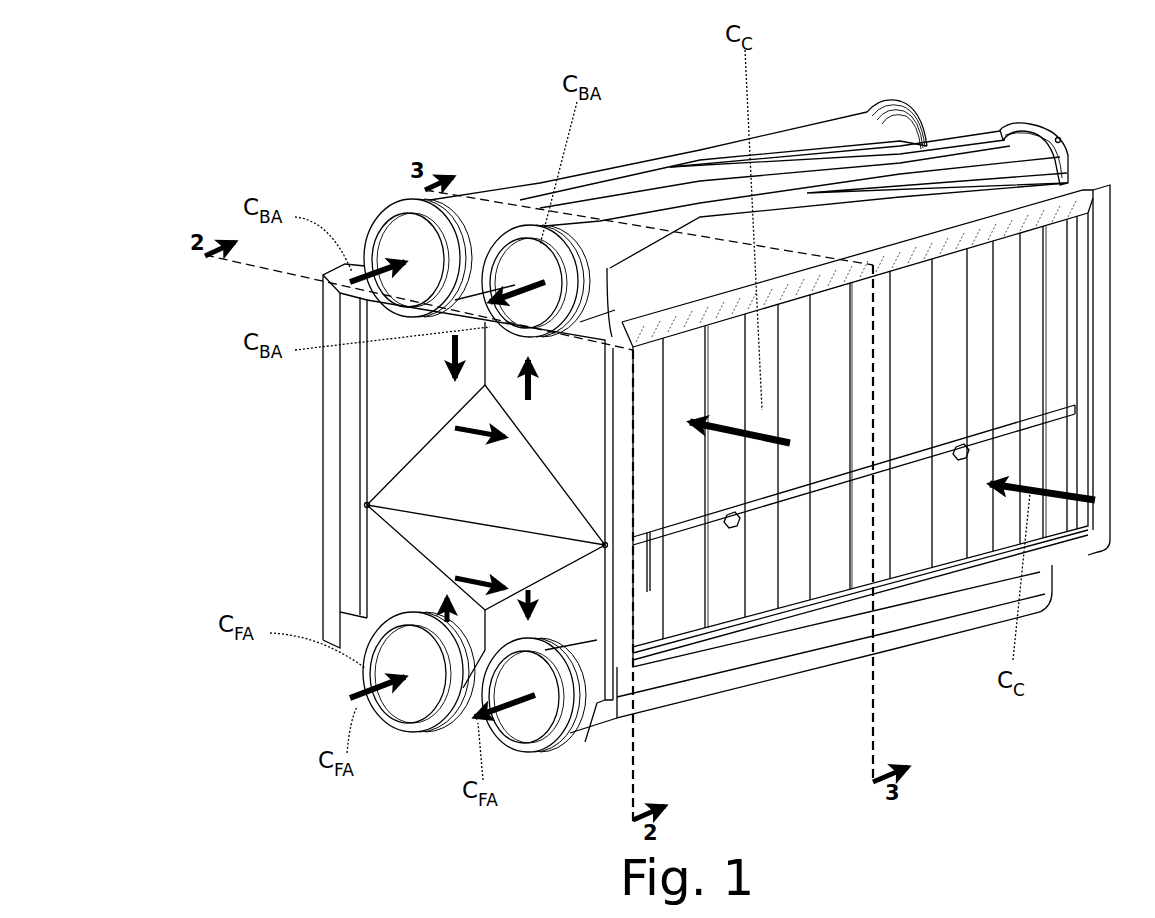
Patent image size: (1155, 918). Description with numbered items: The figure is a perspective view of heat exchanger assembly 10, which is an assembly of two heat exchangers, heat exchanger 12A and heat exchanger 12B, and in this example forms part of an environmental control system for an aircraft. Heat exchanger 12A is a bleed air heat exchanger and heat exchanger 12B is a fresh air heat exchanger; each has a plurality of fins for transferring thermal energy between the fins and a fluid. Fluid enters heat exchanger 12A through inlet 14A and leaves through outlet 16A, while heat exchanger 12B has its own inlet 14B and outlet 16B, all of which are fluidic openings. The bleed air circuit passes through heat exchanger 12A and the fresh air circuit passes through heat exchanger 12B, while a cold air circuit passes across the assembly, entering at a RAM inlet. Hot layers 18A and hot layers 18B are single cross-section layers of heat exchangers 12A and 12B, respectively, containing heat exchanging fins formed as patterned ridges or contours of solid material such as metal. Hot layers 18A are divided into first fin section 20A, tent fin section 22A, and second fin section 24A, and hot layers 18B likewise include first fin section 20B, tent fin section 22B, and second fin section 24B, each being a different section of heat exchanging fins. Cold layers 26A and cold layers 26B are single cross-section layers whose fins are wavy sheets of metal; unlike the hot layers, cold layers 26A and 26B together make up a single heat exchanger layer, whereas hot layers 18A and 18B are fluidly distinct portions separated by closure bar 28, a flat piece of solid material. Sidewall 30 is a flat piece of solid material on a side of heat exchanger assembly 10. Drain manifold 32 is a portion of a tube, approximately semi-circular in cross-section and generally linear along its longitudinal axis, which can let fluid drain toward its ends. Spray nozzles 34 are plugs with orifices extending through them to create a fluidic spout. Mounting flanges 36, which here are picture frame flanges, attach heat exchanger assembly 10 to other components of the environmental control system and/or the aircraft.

The heat exchanger assembly 10 is at (518, 136).
The heat exchanger 12A is at (362, 405).
The heat exchanger 12B is at (362, 562).
The inlet 14A is at (372, 223).
The inlet 14B is at (373, 650).
The outlet 16A is at (543, 228).
The outlet 16B is at (543, 748).
The hot layers 18A is at (728, 360).
The hot layers 18B is at (800, 567).
The first fin section 20A is at (419, 383).
The first fin section 20B is at (415, 595).
The tent fin section 22A is at (480, 457).
The tent fin section 22B is at (480, 564).
The second fin section 24A is at (556, 405).
The second fin section 24B is at (555, 603).
The cold layers 26A is at (836, 350).
The cold layers 26B is at (912, 537).
The closure bar 28 is at (400, 500).
The sidewall 30 is at (832, 445).
The drain manifold 32 is at (648, 592).
The spray nozzles 34 is at (732, 528).
The mounting flanges 36 is at (323, 327).